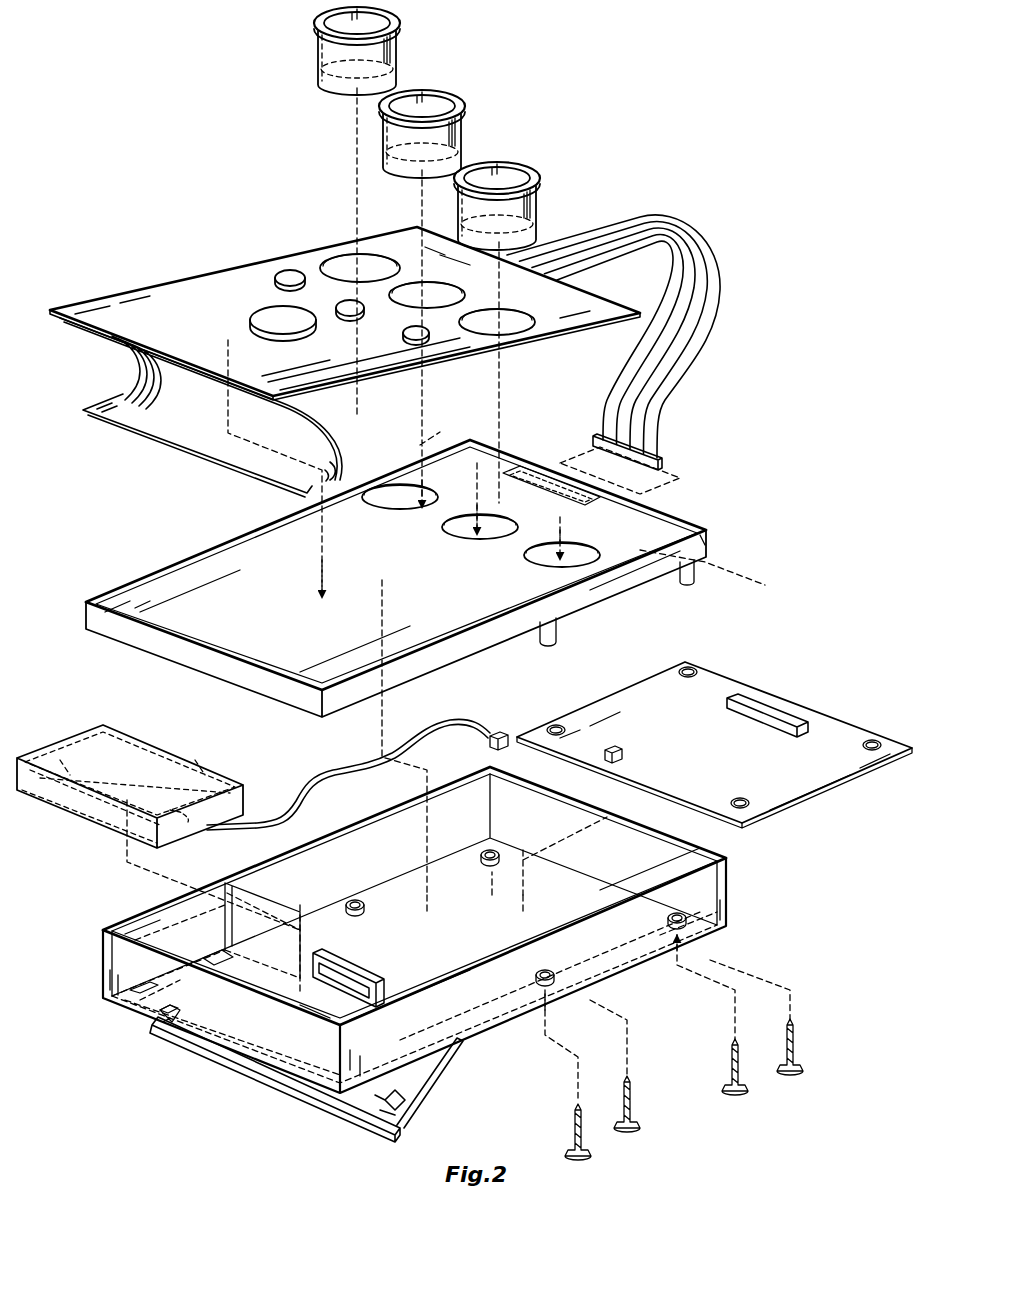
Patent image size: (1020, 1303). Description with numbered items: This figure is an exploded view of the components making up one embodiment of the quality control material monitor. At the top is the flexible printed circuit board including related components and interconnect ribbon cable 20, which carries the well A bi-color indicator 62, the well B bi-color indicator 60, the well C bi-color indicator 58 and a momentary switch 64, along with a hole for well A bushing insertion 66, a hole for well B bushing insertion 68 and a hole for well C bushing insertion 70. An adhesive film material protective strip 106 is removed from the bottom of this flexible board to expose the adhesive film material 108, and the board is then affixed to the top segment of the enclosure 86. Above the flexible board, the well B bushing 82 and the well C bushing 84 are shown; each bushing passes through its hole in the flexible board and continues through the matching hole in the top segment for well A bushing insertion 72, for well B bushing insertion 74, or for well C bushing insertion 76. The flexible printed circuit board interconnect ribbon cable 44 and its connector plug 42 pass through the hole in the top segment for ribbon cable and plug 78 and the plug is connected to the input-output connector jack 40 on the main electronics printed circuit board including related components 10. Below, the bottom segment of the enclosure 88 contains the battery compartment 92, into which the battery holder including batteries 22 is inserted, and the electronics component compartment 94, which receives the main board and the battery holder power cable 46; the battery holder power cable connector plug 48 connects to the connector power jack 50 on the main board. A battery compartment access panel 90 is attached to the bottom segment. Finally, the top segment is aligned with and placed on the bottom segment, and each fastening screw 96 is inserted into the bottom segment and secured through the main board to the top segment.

The main electronics printed circuit board including related components 10 is at (702, 660).
The flexible printed circuit board including related components and interconnect rib 20 is at (118, 291).
The battery holder including batteries 22 is at (62, 805).
The main electronics printed circuit board input-output connector jack 40 is at (765, 585).
The flexible printed circuit board interconnect ribbon cable connector plug 42 is at (668, 465).
The flexible printed circuit board interconnect ribbon cable 44 is at (677, 388).
The battery holder power cable 46 is at (299, 791).
The battery holder power cable connector plug 48 is at (485, 740).
The main electronics printed circuit board connector power jack 50 is at (612, 740).
The well C bi-color indicator 58 is at (411, 340).
The well B bi-color indicator 60 is at (340, 300).
The well A bi-color indicator 62 is at (280, 272).
The momentary switch 64 is at (252, 313).
The hole in flexible printed circuit board for well A bushing insertion 66 is at (350, 262).
The hole in flexible printed circuit board for well B bushing insertion 68 is at (432, 302).
The hole in flexible printed circuit board for well C bushing insertion 70 is at (520, 322).
The hole in top segment of quality control material monitor enclosure for well A bus 72 is at (422, 505).
The hole in top segment of quality control material monitor enclosure for well B bus 74 is at (497, 537).
The hole in top segment of quality control material monitor enclosure for well C bus 76 is at (587, 563).
The hole in top segment of quality control material monitor enclosure for ribbon cab 78 is at (547, 462).
The well B bushing 82 is at (463, 122).
The well C bushing 84 is at (545, 183).
The top segment of quality control material monitor enclosure 86 is at (177, 556).
The bottom segment of quality control material monitor enclosure 88 is at (728, 884).
The battery compartment access panel of quality control material monitor enclosure 90 is at (433, 1098).
The battery compartment of quality control material monitor enclosure 92 is at (195, 944).
The electronics component compartment of quality control material monitor enclosure 94 is at (405, 906).
The fastening screw for quality control material monitor enclosure 96 is at (732, 1058).
The adhesive film material protective strip 106 is at (133, 425).
The adhesive film material 108 is at (82, 338).